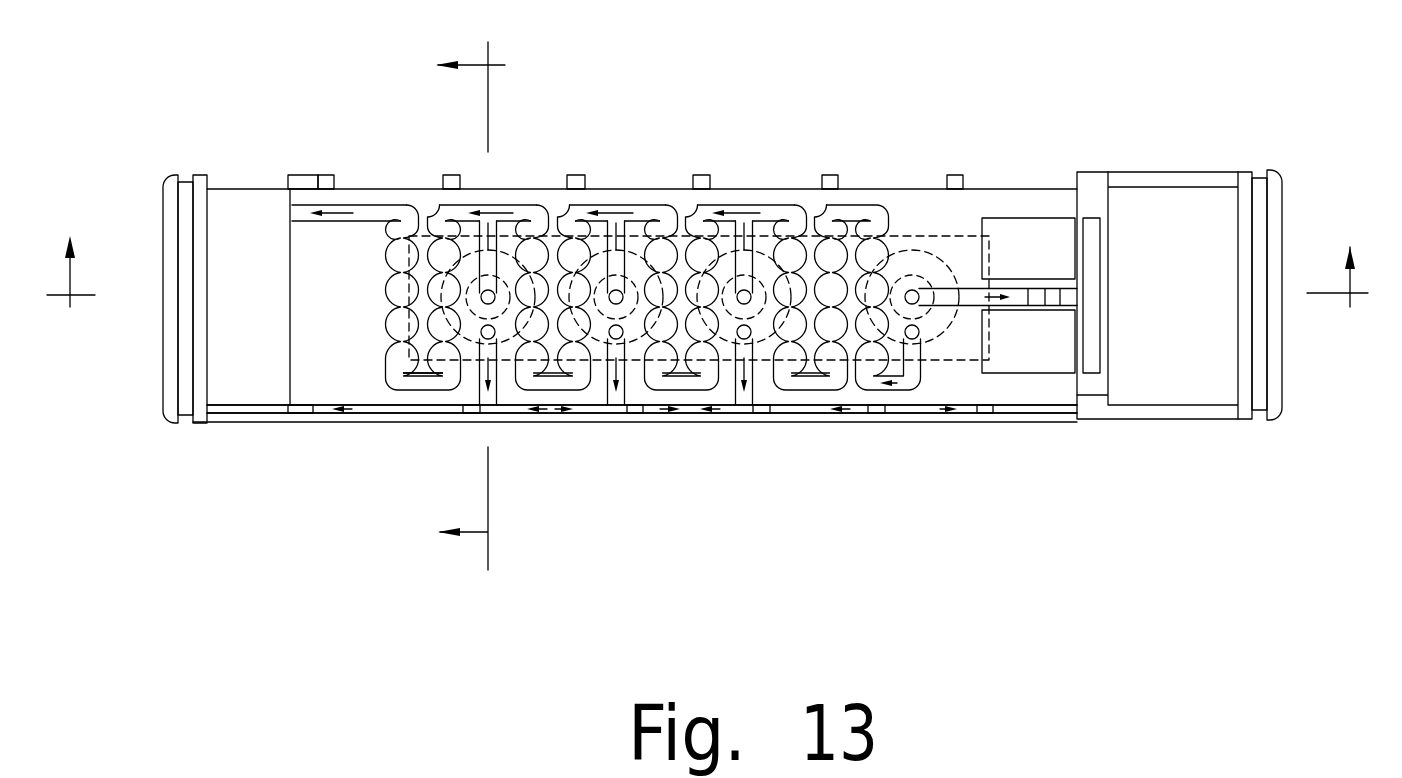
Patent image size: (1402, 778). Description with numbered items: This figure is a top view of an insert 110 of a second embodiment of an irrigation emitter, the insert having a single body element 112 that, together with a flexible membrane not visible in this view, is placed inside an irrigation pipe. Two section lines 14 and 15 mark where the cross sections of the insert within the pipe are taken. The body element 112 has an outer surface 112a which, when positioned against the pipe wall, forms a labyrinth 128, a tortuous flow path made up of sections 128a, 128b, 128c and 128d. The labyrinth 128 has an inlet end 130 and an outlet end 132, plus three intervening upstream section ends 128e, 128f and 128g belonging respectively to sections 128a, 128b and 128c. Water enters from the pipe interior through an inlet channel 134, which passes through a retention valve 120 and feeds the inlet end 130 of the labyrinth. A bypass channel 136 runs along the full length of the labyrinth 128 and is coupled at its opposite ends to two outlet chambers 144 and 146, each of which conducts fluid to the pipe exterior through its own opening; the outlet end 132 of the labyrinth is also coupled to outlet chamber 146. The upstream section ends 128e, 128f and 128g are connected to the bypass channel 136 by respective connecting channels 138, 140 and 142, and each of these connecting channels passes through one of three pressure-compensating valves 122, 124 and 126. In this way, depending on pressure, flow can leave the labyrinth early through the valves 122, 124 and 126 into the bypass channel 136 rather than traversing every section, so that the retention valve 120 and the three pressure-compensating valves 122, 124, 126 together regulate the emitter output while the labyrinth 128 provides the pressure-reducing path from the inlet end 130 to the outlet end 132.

The insert 110 is at (1257, 157).
The body element 112 is at (1098, 420).
The outer surface 112a is at (937, 388).
The retention valve 120 is at (928, 245).
The pressure-compensating valve 122 is at (773, 257).
The pressure-compensating valve 124 is at (637, 258).
The pressure-compensating valve 126 is at (515, 262).
The labyrinth 128 is at (413, 387).
The labyrinth section 128a is at (813, 382).
The labyrinth section 128b is at (672, 382).
The labyrinth section 128c is at (543, 382).
The labyrinth section 128d is at (437, 387).
The upstream section end 128e is at (760, 243).
The upstream section end 128f is at (618, 235).
The upstream section end 128g is at (486, 212).
The inlet end 130 is at (902, 385).
The outlet end 132 is at (362, 206).
The inlet channel 134 is at (955, 305).
The bypass channel 136 is at (775, 408).
The connecting channel 138 is at (735, 240).
The connecting channel 140 is at (596, 230).
The connecting channel 142 is at (487, 243).
The outlet chamber 144 is at (1212, 263).
The outlet chamber 146 is at (243, 370).
The section line 14- 14 is at (724, 271).
The section line 15- 15 is at (470, 299).